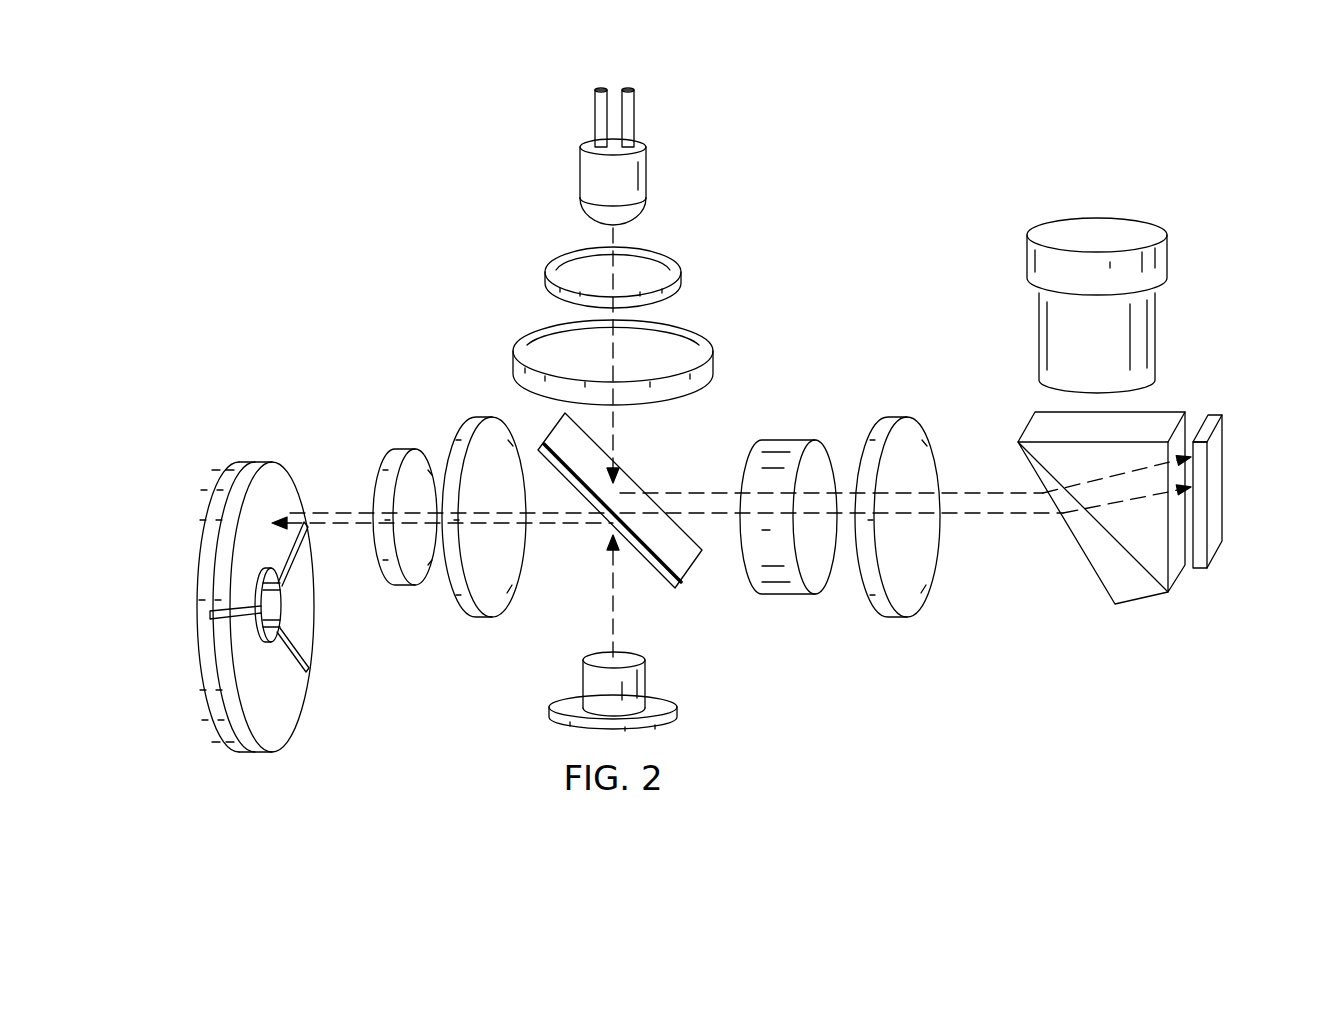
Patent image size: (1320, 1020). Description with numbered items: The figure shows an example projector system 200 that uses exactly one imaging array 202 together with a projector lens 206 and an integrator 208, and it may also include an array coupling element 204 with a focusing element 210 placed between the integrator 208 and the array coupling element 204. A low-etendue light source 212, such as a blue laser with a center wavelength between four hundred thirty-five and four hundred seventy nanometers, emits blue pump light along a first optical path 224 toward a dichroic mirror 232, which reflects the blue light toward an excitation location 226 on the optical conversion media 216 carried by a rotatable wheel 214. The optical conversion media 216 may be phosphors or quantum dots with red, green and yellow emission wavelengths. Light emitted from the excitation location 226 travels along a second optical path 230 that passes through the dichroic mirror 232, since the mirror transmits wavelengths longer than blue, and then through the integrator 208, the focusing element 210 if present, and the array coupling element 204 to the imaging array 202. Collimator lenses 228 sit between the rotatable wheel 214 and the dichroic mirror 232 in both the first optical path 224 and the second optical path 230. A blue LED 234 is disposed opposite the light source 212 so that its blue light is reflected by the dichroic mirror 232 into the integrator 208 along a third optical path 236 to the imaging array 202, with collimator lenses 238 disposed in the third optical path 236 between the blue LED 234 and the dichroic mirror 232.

The projector system 200 is at (393, 301).
The imaging array 202 is at (1222, 470).
The array coupling element 204 is at (1132, 600).
The projector lens 206 is at (1160, 345).
The integrator 208 is at (793, 596).
The focusing element 210 is at (897, 620).
The low-etendue light source 212 is at (550, 710).
The rotatable wheel 214 is at (205, 652).
The optical conversion media 216 is at (280, 478).
The first optical path 224 is at (598, 590).
The excitation location 226 is at (283, 508).
The collimator lenses 228 is at (405, 452).
The second optical path 230 is at (1005, 526).
The dichroic mirror 232 is at (667, 583).
The blue LED 234 is at (578, 172).
The third optical path 236 is at (988, 480).
The collimator lenses 238 is at (545, 280).